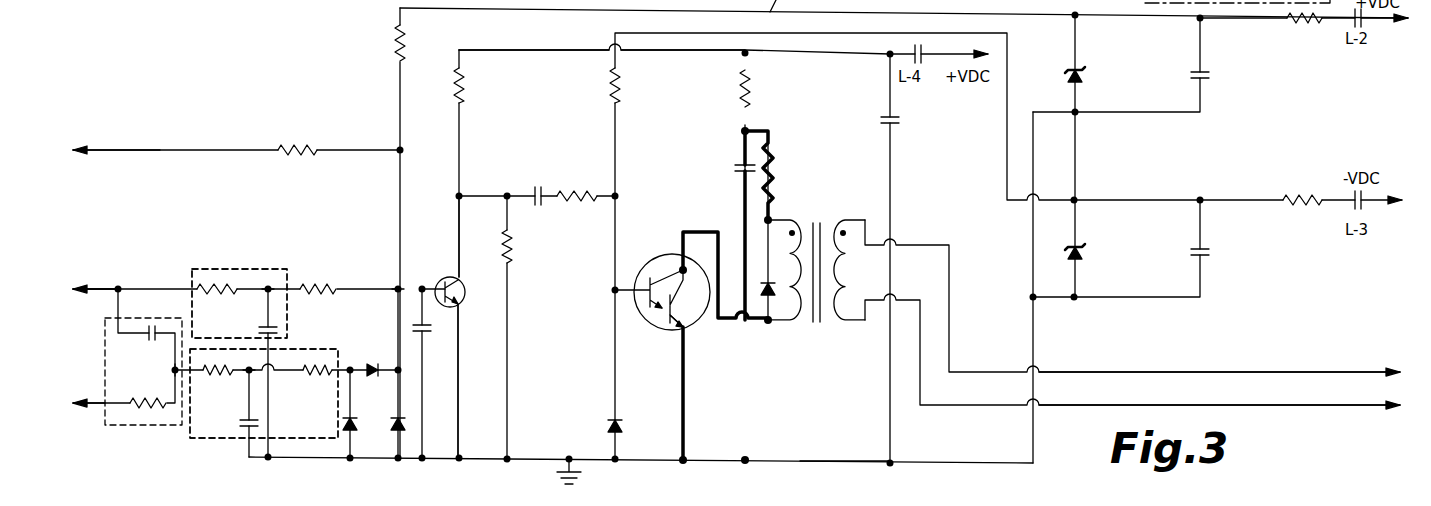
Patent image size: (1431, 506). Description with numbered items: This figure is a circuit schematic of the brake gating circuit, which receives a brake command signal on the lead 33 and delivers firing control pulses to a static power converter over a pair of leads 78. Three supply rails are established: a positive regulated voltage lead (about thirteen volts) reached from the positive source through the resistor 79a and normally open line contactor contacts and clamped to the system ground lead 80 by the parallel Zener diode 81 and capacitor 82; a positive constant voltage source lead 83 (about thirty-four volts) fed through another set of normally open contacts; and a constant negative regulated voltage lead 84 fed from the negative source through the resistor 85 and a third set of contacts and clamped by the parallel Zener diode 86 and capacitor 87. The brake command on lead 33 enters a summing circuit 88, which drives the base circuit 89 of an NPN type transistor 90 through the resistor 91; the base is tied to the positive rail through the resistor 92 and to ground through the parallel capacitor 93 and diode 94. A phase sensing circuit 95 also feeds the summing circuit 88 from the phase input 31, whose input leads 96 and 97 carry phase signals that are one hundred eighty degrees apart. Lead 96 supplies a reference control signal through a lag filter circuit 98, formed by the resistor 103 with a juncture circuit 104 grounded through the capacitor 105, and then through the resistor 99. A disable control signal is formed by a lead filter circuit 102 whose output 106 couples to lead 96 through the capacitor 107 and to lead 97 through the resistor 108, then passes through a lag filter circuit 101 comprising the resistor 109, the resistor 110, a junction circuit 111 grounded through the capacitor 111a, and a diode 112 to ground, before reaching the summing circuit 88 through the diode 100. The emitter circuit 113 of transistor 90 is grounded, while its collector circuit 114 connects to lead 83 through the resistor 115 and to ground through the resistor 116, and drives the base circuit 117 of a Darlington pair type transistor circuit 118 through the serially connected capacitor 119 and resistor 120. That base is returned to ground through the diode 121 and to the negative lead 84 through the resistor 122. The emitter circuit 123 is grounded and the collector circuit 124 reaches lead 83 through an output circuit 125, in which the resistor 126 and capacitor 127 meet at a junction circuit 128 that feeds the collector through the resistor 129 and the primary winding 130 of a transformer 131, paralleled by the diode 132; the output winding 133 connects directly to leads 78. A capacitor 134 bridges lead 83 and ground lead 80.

The phase input 31 is at (98, 275).
The lead 33 is at (165, 148).
The pair of leads 78 is at (1310, 403).
The resistor 79a is at (1305, 22).
The system ground lead 80 is at (838, 458).
The Zener diode 81 is at (1085, 78).
The capacitor 82 is at (1210, 82).
The positive constant voltage source lead 83 is at (560, 50).
The constant negative regulated voltage lead 84 is at (852, 48).
The resistor 85 is at (1318, 198).
The Zener diode 86 is at (1085, 252).
The capacitor 87 is at (1203, 248).
The summing circuit 88 is at (398, 285).
The base circuit 89 is at (432, 285).
The NPN type transistor 90 is at (465, 300).
The resistor 91 is at (300, 150).
The resistor 92 is at (393, 35).
The capacitor 93 is at (428, 335).
The diode 94 is at (396, 417).
The phase sensing circuit 95 is at (226, 227).
The input lead 96 is at (118, 289).
The input lead 97 is at (95, 405).
The lag filter circuit 98 is at (250, 269).
The resistor 99 is at (332, 284).
The diode 100 is at (373, 362).
The lag filter circuit 101 is at (325, 349).
The lead filter circuit 102 is at (105, 338).
The resistor 103 is at (224, 287).
The juncture circuit 104 is at (266, 292).
The capacitor 105 is at (259, 328).
The output 106 is at (172, 370).
The capacitor 107 is at (150, 341).
The resistor 108 is at (150, 400).
The resistor 109 is at (228, 380).
The resistor 110 is at (313, 380).
The junction circuit 111 is at (243, 365).
The capacitor 111a is at (245, 421).
The diode 112 is at (352, 430).
The emitter circuit 113 is at (462, 345).
The collector circuit 114 is at (455, 232).
The resistor 115 is at (467, 85).
The resistor 116 is at (514, 252).
The base circuit 117 is at (622, 290).
The Darlington pair type transistor circuit 118 is at (665, 330).
The capacitor 119 is at (536, 190).
The resistor 120 is at (574, 192).
The diode 121 is at (610, 425).
The resistor 122 is at (624, 85).
The emitter circuit 123 is at (682, 392).
The collector circuit 124 is at (706, 232).
The output circuit 125 is at (800, 132).
The resistor 126 is at (752, 85).
The capacitor 127 is at (742, 165).
The junction circuit 128 is at (742, 131).
The resistor 129 is at (776, 150).
The primary winding 130 is at (792, 218).
The transformer 131 is at (822, 210).
The diode 132 is at (790, 270).
The output winding 133 is at (845, 218).
The capacitor 134 is at (898, 120).